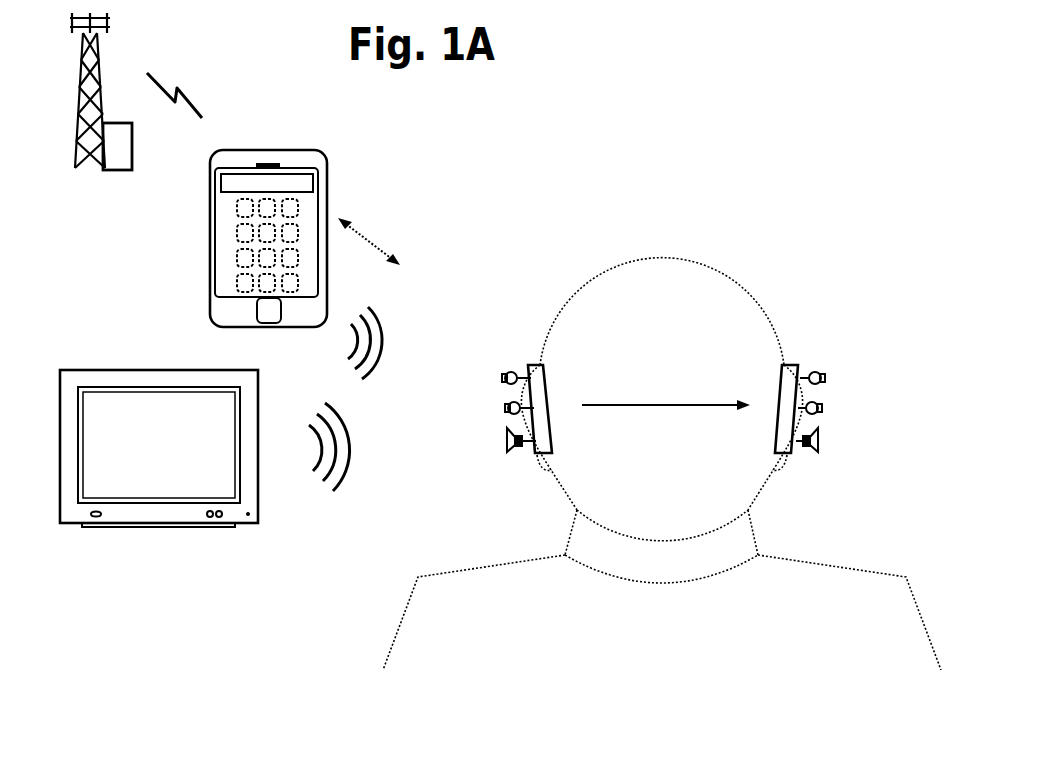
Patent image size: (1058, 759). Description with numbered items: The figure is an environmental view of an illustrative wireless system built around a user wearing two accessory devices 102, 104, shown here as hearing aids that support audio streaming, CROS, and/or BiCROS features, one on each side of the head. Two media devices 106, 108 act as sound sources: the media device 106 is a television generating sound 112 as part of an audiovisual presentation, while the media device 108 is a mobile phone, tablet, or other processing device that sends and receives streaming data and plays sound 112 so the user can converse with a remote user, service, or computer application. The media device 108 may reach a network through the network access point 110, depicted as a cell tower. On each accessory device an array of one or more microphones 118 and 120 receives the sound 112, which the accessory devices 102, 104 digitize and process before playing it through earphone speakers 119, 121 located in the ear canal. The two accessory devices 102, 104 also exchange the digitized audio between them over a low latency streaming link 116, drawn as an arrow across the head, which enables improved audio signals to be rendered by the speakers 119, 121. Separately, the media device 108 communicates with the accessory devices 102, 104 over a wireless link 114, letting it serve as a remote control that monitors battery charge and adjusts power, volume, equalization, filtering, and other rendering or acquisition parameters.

The accessory device 102 is at (528, 367).
The accessory device 104 is at (790, 453).
The media device 106 is at (108, 370).
The media device 108 is at (210, 300).
The network access point 110 is at (113, 167).
The sound 112 is at (367, 367).
The wireless link 114 is at (361, 233).
The low latency streaming (LLS) link 116 is at (678, 410).
The microphones 118 is at (507, 407).
The earphone speaker 119 is at (508, 448).
The microphones 120 is at (823, 407).
The earphone speaker 121 is at (820, 443).